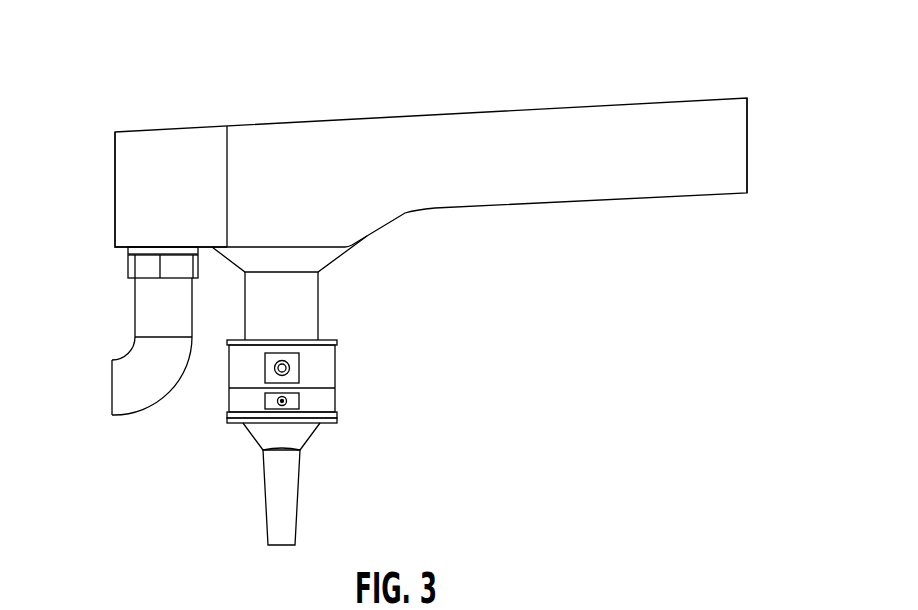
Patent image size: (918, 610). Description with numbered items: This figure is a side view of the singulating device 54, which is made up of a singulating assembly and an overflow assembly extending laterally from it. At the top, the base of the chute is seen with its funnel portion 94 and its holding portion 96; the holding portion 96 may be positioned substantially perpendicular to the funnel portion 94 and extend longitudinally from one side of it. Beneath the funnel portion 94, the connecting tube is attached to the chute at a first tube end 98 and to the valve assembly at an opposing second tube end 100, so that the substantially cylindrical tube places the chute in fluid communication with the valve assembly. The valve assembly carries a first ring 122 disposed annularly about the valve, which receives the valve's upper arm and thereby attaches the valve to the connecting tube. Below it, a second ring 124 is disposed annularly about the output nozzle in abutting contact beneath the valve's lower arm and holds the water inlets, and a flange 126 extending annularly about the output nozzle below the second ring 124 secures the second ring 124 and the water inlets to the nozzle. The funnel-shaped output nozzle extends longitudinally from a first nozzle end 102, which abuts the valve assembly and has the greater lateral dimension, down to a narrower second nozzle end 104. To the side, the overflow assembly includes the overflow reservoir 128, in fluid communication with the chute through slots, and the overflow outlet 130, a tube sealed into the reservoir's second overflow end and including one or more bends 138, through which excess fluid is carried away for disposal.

The singulating device 54 is at (131, 75).
The funnel portion 94 is at (308, 168).
The holding portion 96 is at (625, 183).
The first tube end 98 is at (307, 290).
The second tube end 100 is at (307, 332).
The first nozzle end 102 is at (303, 433).
The second nozzle end 104 is at (290, 537).
The first ring 122 is at (333, 368).
The second ring 124 is at (232, 403).
The flange 126 is at (230, 404).
The overflow reservoir 128 is at (127, 169).
The overflow outlet 130 is at (147, 315).
The bend 138 is at (128, 355).